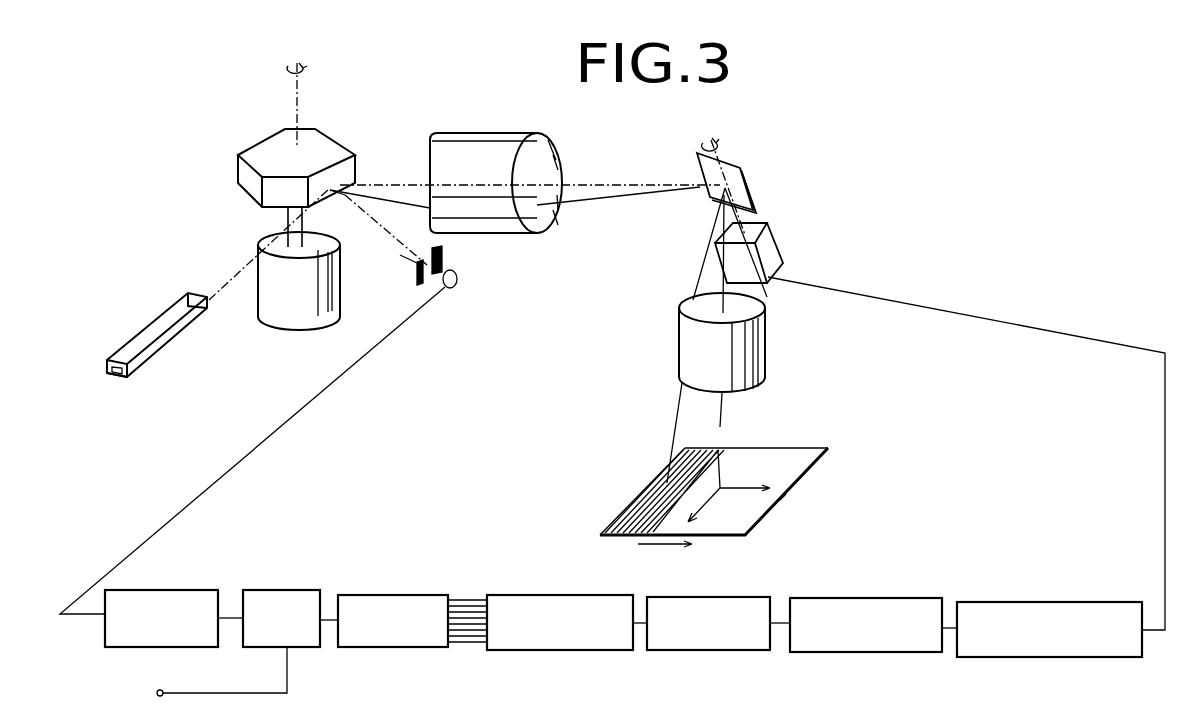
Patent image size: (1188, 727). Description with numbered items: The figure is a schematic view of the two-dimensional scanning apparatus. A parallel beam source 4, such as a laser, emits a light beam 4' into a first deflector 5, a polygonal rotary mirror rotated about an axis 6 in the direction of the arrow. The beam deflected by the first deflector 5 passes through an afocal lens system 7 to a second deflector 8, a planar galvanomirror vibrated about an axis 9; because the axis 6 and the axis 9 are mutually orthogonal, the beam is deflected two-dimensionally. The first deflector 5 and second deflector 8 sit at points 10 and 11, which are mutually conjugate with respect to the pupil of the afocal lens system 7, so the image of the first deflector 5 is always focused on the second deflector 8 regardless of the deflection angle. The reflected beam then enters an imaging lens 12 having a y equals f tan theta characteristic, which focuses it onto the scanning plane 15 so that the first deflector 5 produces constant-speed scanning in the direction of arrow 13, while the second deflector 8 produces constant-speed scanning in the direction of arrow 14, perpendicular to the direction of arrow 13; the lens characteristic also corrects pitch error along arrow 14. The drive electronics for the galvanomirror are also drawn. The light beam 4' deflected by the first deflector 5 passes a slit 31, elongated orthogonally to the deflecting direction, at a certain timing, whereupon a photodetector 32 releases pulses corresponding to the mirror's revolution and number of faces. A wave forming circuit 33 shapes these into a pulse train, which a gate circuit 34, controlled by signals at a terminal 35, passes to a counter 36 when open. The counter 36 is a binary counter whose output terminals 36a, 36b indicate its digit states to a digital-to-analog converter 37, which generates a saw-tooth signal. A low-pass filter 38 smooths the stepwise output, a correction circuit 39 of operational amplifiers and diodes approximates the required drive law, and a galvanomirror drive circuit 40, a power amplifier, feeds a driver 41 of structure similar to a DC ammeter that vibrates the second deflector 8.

The parallel beam source 4 is at (157, 335).
The light beam 4' is at (269, 248).
The first deflector 5 is at (320, 137).
The axis 6 is at (307, 103).
The afocal lens system 7 is at (478, 132).
The second deflector 8 is at (740, 178).
The axis 9 is at (718, 150).
The point 10 is at (338, 175).
The point 11 is at (746, 190).
The imaging lens 12 is at (768, 345).
The arrow 13 is at (779, 501).
The arrow 14 is at (663, 545).
The scanning plane 15 is at (763, 448).
The slit 31 is at (418, 265).
The photodetector 32 is at (457, 273).
The wave forming circuit 33 is at (185, 590).
The gate circuit 34 is at (285, 590).
The terminal 35 is at (206, 677).
The counter 36 is at (387, 595).
The output terminal 36a is at (457, 596).
The output terminal 36b is at (476, 597).
The digital-to-analog converter 37 is at (558, 595).
The low-pass filter 38 is at (700, 597).
The correction circuit 39 is at (878, 597).
The galvanomirror drive circuit 40 is at (1065, 602).
The driver 41 is at (783, 258).